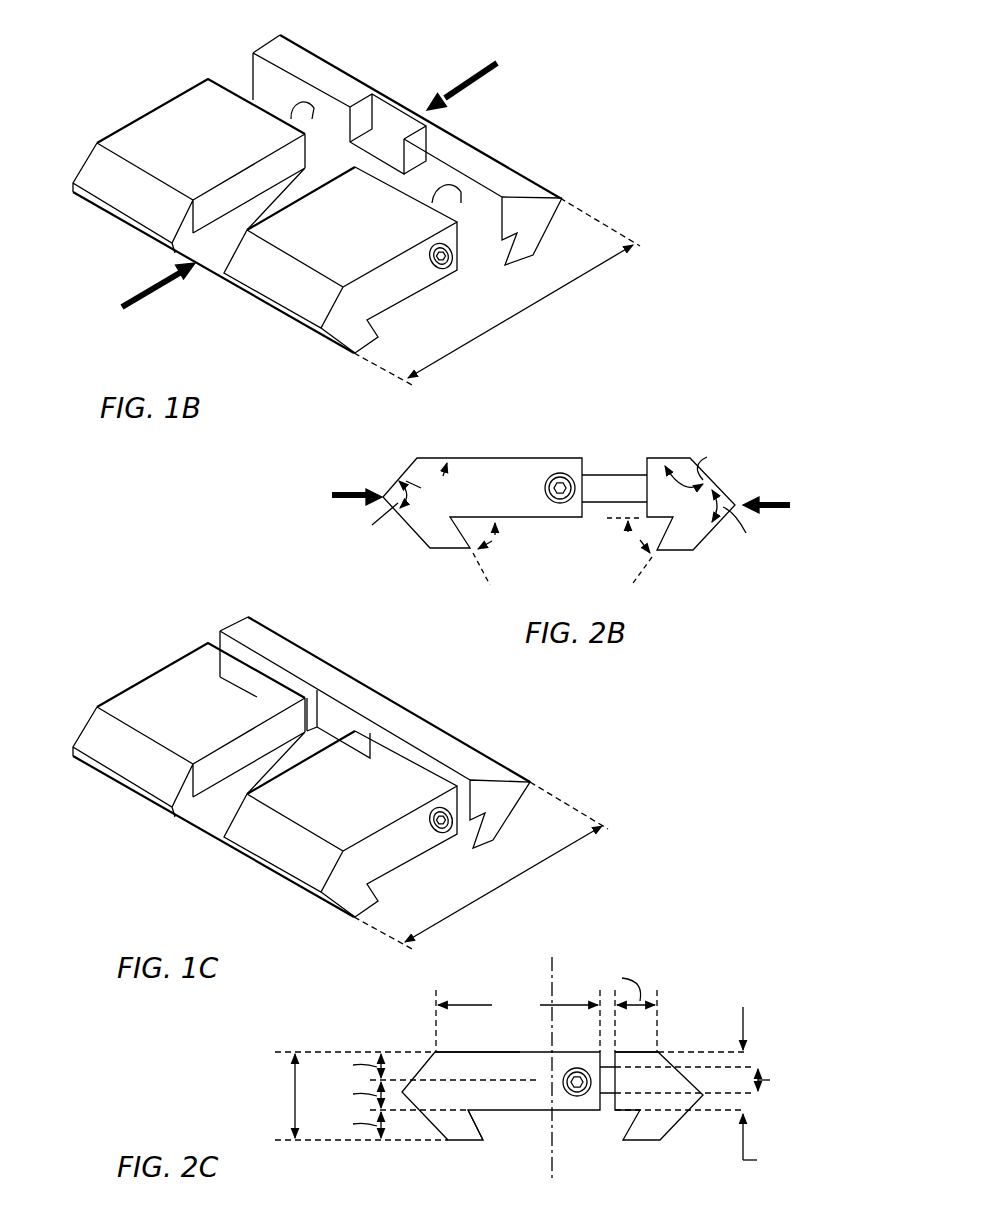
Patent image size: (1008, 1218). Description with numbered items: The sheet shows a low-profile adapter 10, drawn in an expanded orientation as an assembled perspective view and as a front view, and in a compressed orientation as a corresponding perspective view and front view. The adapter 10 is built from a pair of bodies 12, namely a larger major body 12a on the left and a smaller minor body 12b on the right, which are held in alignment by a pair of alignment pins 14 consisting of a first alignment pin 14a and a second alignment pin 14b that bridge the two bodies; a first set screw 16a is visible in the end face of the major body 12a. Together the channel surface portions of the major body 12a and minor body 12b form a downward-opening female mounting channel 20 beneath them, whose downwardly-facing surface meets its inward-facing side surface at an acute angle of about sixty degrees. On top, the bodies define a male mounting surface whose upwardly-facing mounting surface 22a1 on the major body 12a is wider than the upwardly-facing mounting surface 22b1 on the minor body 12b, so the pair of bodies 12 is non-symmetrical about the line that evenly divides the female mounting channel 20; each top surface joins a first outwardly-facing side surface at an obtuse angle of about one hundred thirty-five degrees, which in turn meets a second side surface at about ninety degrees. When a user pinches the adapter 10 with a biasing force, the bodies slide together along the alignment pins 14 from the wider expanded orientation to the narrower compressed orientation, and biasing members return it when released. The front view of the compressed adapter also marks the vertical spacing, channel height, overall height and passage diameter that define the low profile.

In FIG. 1B, the adapter 10 is at (584, 66).
In FIG. 2B, the adapter 10 is at (706, 390).
In FIG. 1C, the adapter 10 is at (421, 660).
In FIG. 2C, the adapter 10 is at (722, 971).
In FIG. 1B, the pair of bodies 12 is at (106, 13).
In FIG. 2B, the pair of bodies 12 is at (630, 383).
In FIG. 1C, the pair of bodies 12 is at (106, 577).
In FIG. 1B, the major body 12a is at (187, 108).
In FIG. 2B, the major body 12a is at (490, 447).
In FIG. 1C, the major body 12a is at (187, 672).
In FIG. 2C, the major body 12a is at (430, 1132).
In FIG. 1B, the minor body 12b is at (240, 36).
In FIG. 2B, the minor body 12b is at (667, 450).
In FIG. 1C, the minor body 12b is at (228, 620).
In FIG. 2C, the minor body 12b is at (684, 1128).
In FIG. 1B, the pair of alignment pins 14 is at (428, 44).
In FIG. 1B, the first alignment pin 14a is at (428, 186).
In FIG. 2B, the first alignment pin 14a is at (611, 469).
In FIG. 2C, the first alignment pin 14a is at (607, 1080).
In FIG. 1B, the second alignment pin 14b is at (293, 104).
In FIG. 1B, the first set screw 16a is at (444, 266).
In FIG. 2B, the first set screw 16a is at (556, 503).
In FIG. 1C, the first set screw 16a is at (442, 831).
In FIG. 2C, the first set screw 16a is at (573, 1095).
In FIG. 2C, the female mounting channel 20 is at (527, 1132).
In FIG. 2C, the upwardly-facing mounting surface of the major body 22a1 is at (511, 1050).
In FIG. 2C, the upwardly-facing mounting surface of the minor body 22b1 is at (636, 1050).